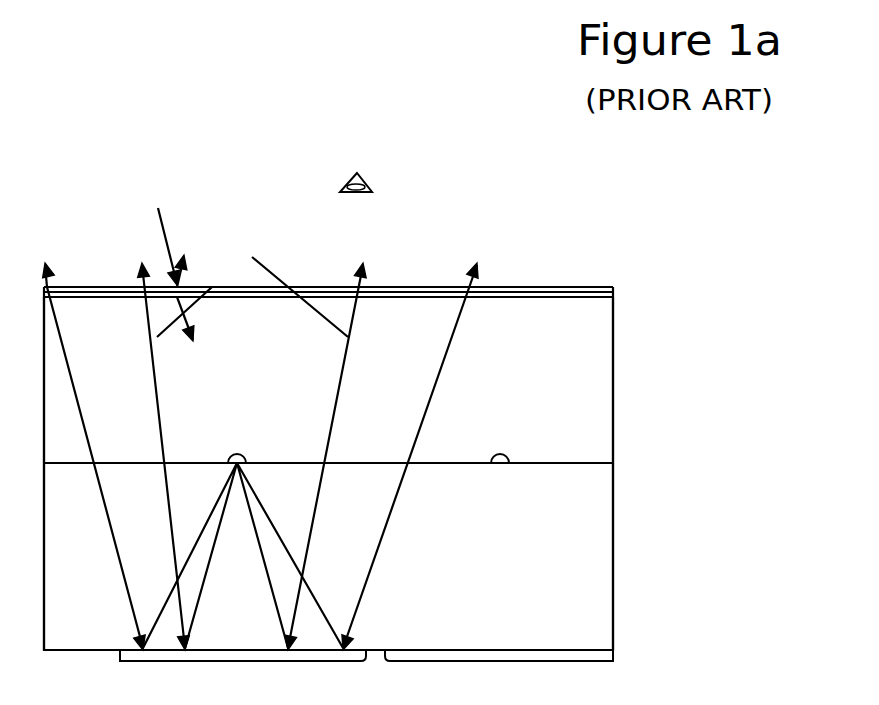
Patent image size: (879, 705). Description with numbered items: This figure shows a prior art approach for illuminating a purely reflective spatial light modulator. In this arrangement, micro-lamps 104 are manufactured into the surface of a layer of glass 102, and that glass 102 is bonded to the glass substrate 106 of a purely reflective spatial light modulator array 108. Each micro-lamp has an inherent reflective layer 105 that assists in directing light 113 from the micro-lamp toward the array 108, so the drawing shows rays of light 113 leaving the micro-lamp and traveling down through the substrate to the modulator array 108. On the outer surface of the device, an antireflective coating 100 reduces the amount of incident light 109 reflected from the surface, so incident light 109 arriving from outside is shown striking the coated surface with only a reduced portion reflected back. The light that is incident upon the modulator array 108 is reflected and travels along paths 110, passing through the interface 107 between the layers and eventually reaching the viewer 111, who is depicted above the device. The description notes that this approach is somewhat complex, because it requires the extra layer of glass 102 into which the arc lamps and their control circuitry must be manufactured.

The antireflective coating 100 is at (613, 297).
The glass 102 is at (588, 352).
The micro-lamps 104 is at (508, 460).
The reflective layer 105 is at (243, 450).
The glass substrate 106 is at (593, 548).
The interface 107 is at (432, 463).
The spatial light modulator array 108 is at (518, 660).
The incident light 109 is at (158, 208).
The paths 110 is at (247, 260).
The viewer 111 is at (347, 172).
The light 113 is at (263, 512).